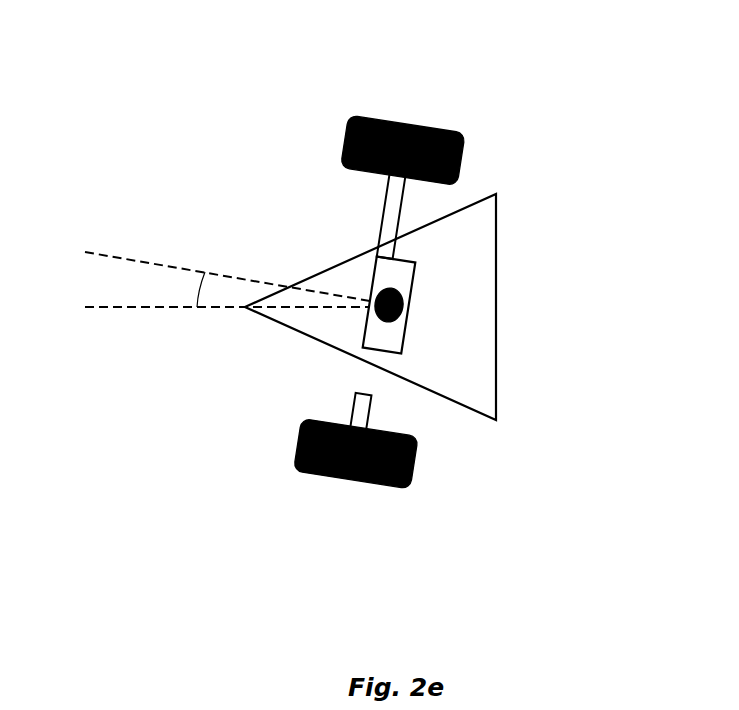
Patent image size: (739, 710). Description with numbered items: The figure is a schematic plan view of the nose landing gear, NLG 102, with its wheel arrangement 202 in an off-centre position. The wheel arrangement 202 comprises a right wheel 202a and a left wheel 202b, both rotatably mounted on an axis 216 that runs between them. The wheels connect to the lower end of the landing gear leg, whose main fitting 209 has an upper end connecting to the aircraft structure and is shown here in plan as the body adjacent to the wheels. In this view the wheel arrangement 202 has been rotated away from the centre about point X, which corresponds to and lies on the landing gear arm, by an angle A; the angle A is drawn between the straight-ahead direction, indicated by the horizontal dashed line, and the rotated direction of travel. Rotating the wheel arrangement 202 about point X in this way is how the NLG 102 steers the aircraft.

The nose landing gear (NLG) 102 is at (160, 494).
The wheel arrangement 202 is at (440, 202).
The right wheel 202a is at (412, 124).
The left wheel 202b is at (352, 485).
The main fitting 209 is at (497, 383).
The axis 216 is at (392, 202).
The point X is at (403, 294).
The angle A is at (238, 296).